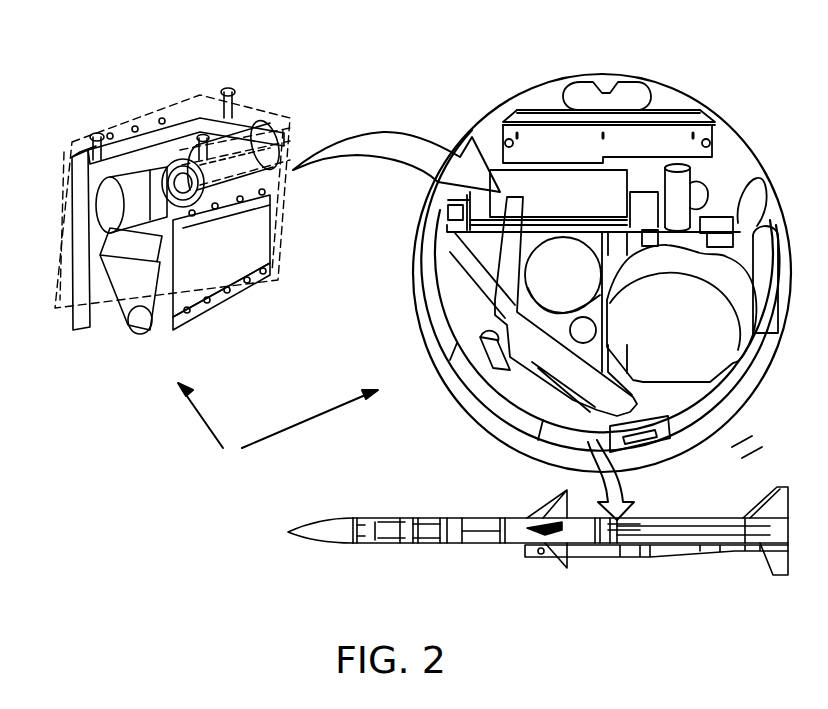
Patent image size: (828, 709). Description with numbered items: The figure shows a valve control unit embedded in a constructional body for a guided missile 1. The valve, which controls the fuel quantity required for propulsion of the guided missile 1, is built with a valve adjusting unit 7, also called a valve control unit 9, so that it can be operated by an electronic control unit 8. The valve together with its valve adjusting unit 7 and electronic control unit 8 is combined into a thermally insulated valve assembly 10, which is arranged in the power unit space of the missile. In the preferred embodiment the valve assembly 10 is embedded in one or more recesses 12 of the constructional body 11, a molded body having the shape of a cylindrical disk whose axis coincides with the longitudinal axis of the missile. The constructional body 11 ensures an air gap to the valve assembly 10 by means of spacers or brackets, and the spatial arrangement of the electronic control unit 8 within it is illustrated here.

The guided missile 1 is at (582, 558).
The valve adjusting unit 7 is at (240, 163).
The electronic control unit 8 is at (100, 243).
The valve control unit 9 is at (278, 428).
The valve assembly 10 is at (227, 253).
The constructional body 11 is at (770, 140).
The recesses 12 is at (545, 185).